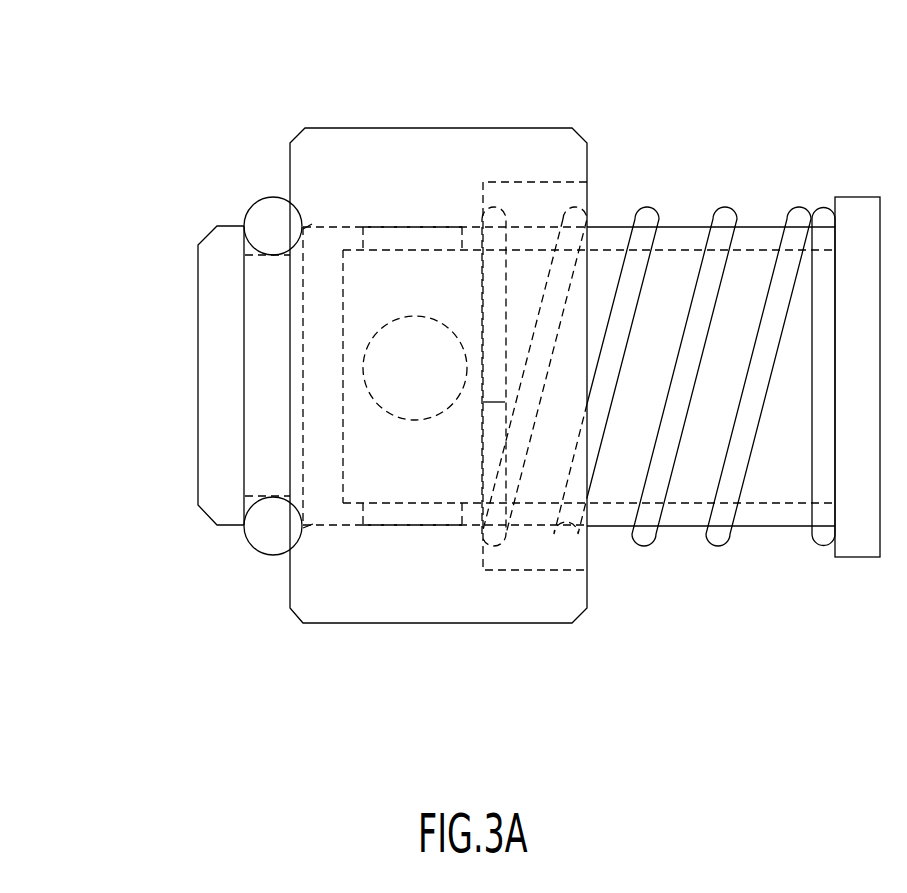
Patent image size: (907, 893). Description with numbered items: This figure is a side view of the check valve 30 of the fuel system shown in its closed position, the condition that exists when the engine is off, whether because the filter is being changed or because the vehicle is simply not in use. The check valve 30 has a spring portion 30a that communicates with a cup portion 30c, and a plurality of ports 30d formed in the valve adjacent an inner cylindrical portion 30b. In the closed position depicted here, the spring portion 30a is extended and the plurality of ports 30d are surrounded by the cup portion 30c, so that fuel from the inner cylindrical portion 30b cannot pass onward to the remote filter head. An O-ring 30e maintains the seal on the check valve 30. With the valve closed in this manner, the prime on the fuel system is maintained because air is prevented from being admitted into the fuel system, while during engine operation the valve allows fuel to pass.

The check valve 30 is at (198, 479).
The spring portion 30a is at (728, 545).
The inner cylindrical portion 30b is at (402, 455).
The cup portion 30c is at (533, 128).
The ports 30d is at (417, 226).
The O-ring 30e is at (272, 197).